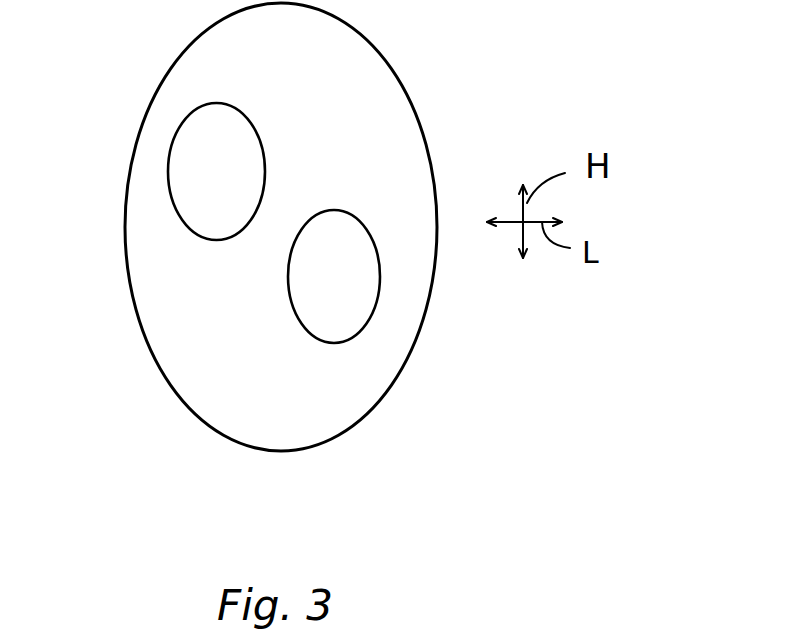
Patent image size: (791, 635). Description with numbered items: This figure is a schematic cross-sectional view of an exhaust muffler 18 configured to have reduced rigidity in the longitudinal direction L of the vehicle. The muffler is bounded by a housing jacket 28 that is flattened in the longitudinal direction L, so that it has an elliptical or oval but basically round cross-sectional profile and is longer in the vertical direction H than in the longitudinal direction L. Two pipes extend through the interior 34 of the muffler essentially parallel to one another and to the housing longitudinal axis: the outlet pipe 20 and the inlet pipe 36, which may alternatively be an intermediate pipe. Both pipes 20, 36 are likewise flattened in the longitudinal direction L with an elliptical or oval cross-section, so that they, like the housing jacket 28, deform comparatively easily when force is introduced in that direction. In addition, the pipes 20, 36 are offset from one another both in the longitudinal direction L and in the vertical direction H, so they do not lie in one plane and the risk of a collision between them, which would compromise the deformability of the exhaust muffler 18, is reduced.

The exhaust muffler 18 is at (490, 105).
The outlet pipe 20 is at (380, 297).
The housing jacket 28 is at (390, 65).
The interior of the muffler 34 is at (188, 355).
The inlet pipe 36 is at (175, 138).